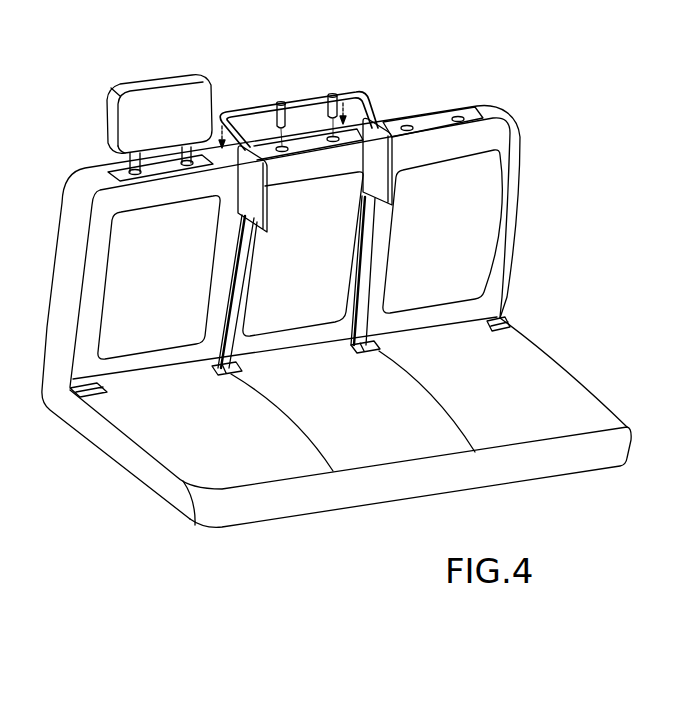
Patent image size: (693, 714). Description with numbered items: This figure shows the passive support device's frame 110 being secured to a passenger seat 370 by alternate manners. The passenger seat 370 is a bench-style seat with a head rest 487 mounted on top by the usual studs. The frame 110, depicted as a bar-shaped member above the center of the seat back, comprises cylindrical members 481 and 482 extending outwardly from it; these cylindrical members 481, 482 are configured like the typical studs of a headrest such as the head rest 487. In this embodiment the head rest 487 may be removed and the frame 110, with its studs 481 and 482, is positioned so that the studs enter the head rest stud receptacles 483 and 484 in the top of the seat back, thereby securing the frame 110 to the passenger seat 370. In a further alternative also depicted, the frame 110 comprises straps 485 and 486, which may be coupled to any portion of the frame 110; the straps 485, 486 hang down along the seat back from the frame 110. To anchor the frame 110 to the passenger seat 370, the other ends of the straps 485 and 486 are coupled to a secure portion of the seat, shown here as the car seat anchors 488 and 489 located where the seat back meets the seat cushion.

The passenger seat 370 is at (535, 174).
The head rest 487 is at (147, 71).
The frame 110 is at (247, 95).
The cylindrical member 481 is at (338, 97).
The cylindrical member 482 is at (282, 100).
The head rest stud receptacle 483 is at (334, 142).
The head rest stud receptacle 484 is at (284, 152).
The strap 485 is at (372, 261).
The strap 486 is at (234, 287).
The car seat anchor 488 is at (223, 376).
The car seat anchor 489 is at (359, 354).